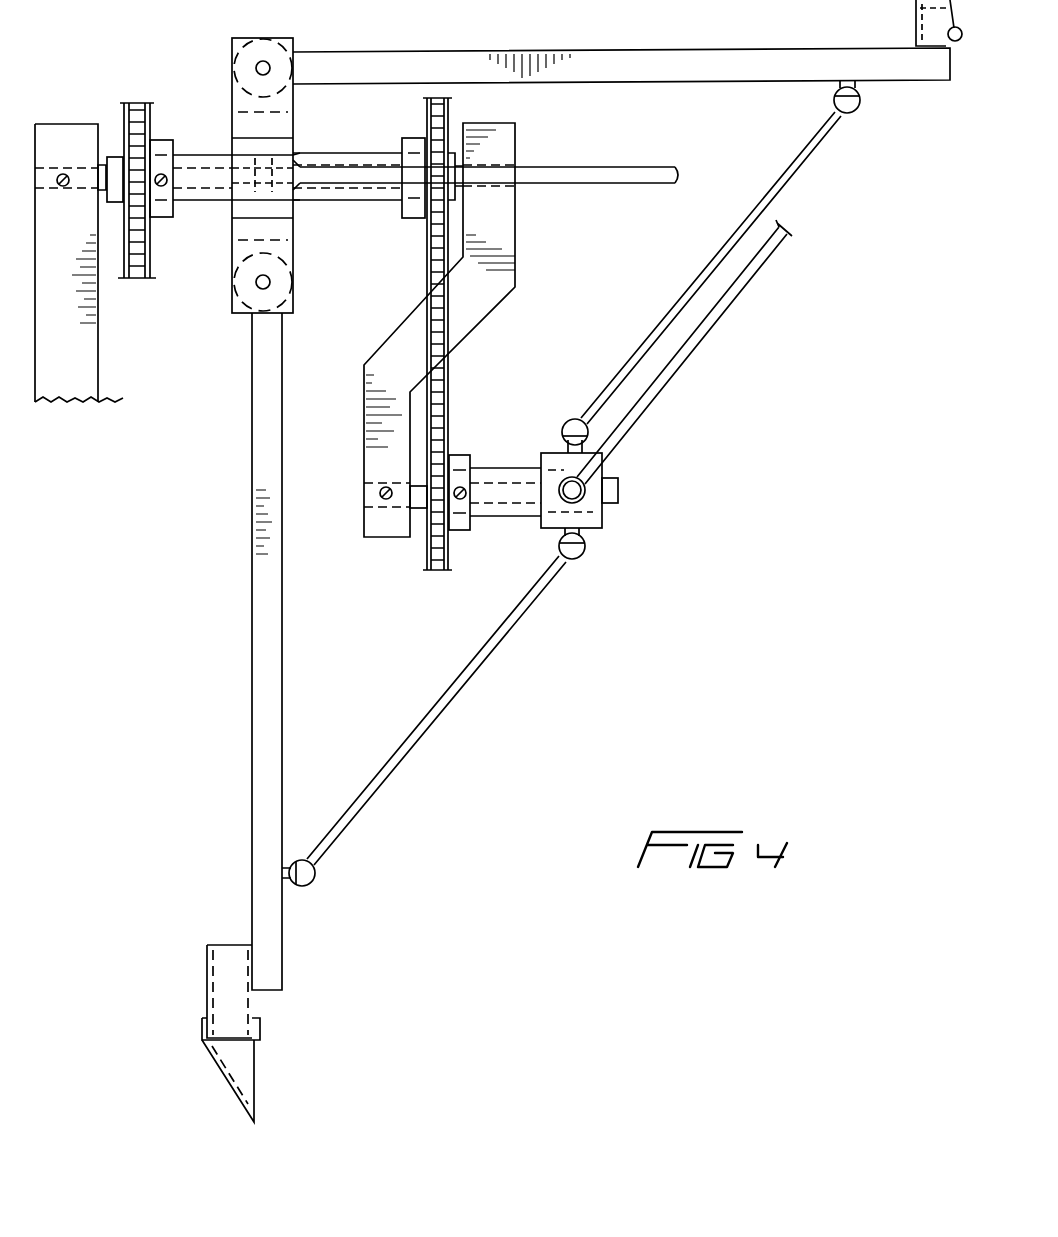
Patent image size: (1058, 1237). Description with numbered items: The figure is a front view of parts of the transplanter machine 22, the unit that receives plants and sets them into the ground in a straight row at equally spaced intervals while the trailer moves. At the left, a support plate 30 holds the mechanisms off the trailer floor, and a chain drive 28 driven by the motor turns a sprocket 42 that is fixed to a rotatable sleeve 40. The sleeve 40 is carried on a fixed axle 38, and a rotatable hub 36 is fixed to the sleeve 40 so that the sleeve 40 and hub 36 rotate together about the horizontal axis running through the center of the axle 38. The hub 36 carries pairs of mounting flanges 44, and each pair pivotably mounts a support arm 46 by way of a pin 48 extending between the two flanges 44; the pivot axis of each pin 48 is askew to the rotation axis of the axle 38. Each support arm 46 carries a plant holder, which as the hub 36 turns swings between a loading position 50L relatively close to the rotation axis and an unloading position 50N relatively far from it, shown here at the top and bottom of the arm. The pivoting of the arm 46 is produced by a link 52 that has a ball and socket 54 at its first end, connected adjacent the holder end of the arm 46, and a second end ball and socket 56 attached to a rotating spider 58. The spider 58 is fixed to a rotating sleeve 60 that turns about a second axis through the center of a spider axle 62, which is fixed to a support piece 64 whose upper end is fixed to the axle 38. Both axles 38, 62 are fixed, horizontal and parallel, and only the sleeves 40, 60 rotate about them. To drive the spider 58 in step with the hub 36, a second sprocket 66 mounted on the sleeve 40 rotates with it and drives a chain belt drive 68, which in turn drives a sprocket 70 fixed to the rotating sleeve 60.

The transplanter machine 22 is at (704, 615).
The chain drive 28 is at (142, 104).
The support plate 30 is at (98, 354).
The rotatable hub 36 is at (293, 148).
The axle 38 is at (103, 160).
The rotatable sleeve 40 is at (375, 200).
The sprocket 42 is at (160, 140).
The mounting flanges 44 is at (232, 48).
The support arm 46 is at (573, 58).
The pin 48 is at (266, 64).
The loading position 50L is at (916, 25).
The unloading position 50N is at (256, 1078).
The link 52 is at (725, 330).
The ball and socket 54 is at (855, 112).
The second end ball and socket 56 is at (566, 425).
The rotating spider 58 is at (603, 520).
The rotating sleeve 60 is at (512, 516).
The spider axle 62 is at (619, 490).
The support piece 64 is at (515, 275).
The second sprocket 66 is at (405, 138).
The chain belt drive 68 is at (448, 380).
The sprocket 70 is at (463, 455).